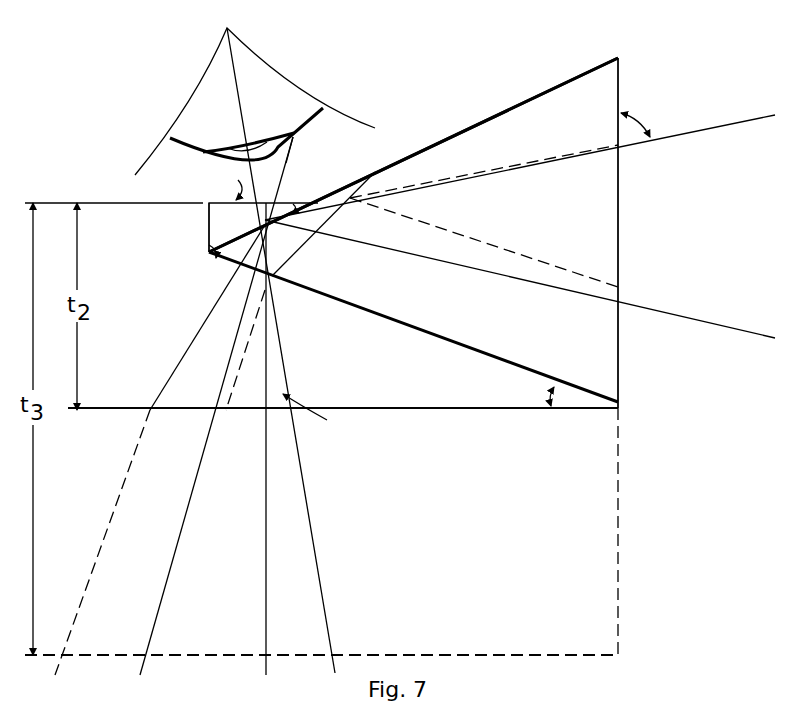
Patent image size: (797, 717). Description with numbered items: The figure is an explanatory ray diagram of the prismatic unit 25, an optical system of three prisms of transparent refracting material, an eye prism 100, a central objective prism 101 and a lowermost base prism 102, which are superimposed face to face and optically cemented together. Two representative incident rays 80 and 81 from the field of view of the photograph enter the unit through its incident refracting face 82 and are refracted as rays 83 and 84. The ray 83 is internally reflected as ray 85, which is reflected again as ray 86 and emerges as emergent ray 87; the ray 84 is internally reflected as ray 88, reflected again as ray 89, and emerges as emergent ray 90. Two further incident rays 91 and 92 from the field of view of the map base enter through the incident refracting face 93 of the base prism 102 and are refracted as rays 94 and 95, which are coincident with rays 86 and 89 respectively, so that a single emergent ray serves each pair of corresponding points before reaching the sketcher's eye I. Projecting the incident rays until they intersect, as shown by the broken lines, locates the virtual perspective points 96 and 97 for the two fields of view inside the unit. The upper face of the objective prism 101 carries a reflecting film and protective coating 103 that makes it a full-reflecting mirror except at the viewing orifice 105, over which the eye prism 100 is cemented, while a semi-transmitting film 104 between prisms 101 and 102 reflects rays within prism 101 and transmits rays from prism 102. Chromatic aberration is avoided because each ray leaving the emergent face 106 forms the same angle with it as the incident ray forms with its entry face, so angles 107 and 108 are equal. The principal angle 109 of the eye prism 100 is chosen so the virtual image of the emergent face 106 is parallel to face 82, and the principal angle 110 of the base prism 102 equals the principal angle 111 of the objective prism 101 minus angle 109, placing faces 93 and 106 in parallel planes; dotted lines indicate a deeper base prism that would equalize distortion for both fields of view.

The sketcher's eye I is at (288, 78).
The prismatic unit 25 is at (551, 75).
The incident ray 80 is at (698, 124).
The incident ray 81 is at (736, 329).
The incident refracting face 82 is at (622, 378).
The refracted ray 83 is at (499, 158).
The refracted ray 84 is at (531, 270).
The internally reflected ray 85 is at (323, 214).
The reflected ray 86 is at (286, 262).
The emergent ray 87 is at (274, 156).
The internally reflected ray 88 is at (290, 228).
The reflected ray 89 is at (236, 271).
The emergent ray 90 is at (286, 163).
The incident ray 91 is at (319, 569).
The incident ray 92 is at (172, 578).
The incident refracting face 93 is at (433, 410).
The refracted ray 94 is at (319, 418).
The refracted ray 95 is at (243, 333).
The virtual perspective point 96 is at (348, 195).
The virtual perspective point 97 is at (262, 289).
The eye prism 100 is at (208, 210).
The objective prism 101 is at (598, 223).
The base prism 102 is at (480, 390).
The reflecting film and protective coating 103 is at (462, 130).
The semi-transmitting film 104 is at (420, 334).
The viewing orifice 105 is at (262, 229).
The emergent face 106 is at (217, 202).
The angle 107 is at (223, 181).
The angle 108 is at (654, 116).
The principal angle of the eye prism 109 is at (300, 197).
The principal angle of the base prism 110 is at (578, 414).
The principal angle of the objective prism 111 is at (208, 256).